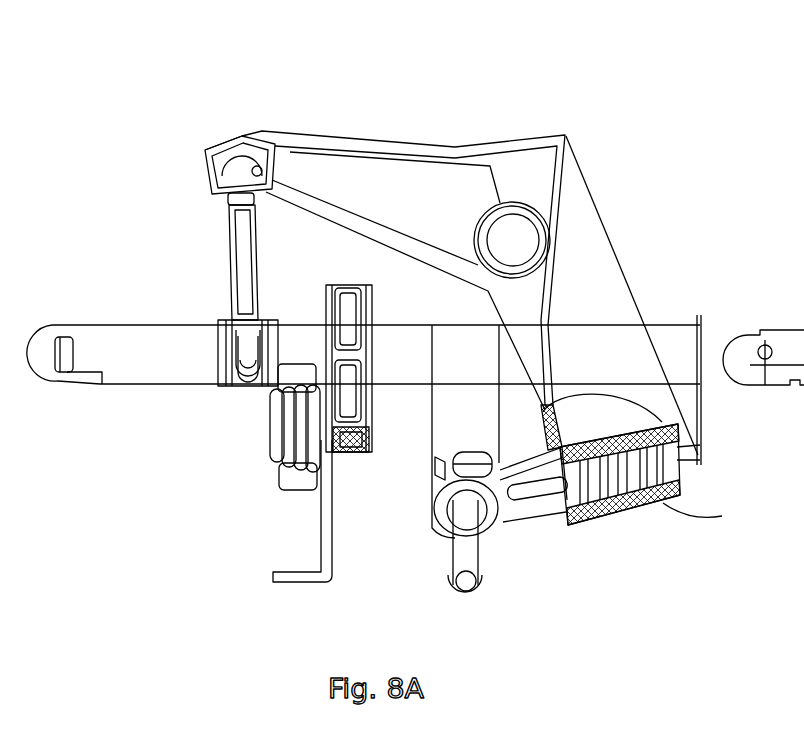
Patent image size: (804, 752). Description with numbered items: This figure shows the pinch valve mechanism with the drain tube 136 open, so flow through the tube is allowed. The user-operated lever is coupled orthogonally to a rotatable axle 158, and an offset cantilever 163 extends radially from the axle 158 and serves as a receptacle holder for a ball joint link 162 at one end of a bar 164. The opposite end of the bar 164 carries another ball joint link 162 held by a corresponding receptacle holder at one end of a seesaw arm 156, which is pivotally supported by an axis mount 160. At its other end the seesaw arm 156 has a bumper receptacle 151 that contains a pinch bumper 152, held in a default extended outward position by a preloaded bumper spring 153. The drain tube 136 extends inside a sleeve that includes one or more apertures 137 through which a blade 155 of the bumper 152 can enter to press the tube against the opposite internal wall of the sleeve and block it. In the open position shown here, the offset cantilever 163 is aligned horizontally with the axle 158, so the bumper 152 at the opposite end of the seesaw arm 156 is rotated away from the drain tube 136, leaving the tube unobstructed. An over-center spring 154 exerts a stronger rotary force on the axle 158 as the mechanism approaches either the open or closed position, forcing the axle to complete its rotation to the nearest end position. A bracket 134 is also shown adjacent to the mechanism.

The bracket 134 is at (434, 310).
The drain tube 136 is at (450, 550).
The aperture 137 is at (472, 452).
The bumper receptacle 151 is at (667, 505).
The pinch bumper 152 is at (552, 525).
The bumper spring 153 is at (621, 487).
The over-center spring 154 is at (277, 428).
The blade 155 is at (505, 520).
The seesaw arm 156 is at (360, 137).
The rotatable axle 158 is at (174, 384).
The axis mount 160 is at (513, 214).
The ball joint link 162 is at (237, 174).
The offset cantilever 163 is at (224, 358).
The bar 164 is at (243, 256).